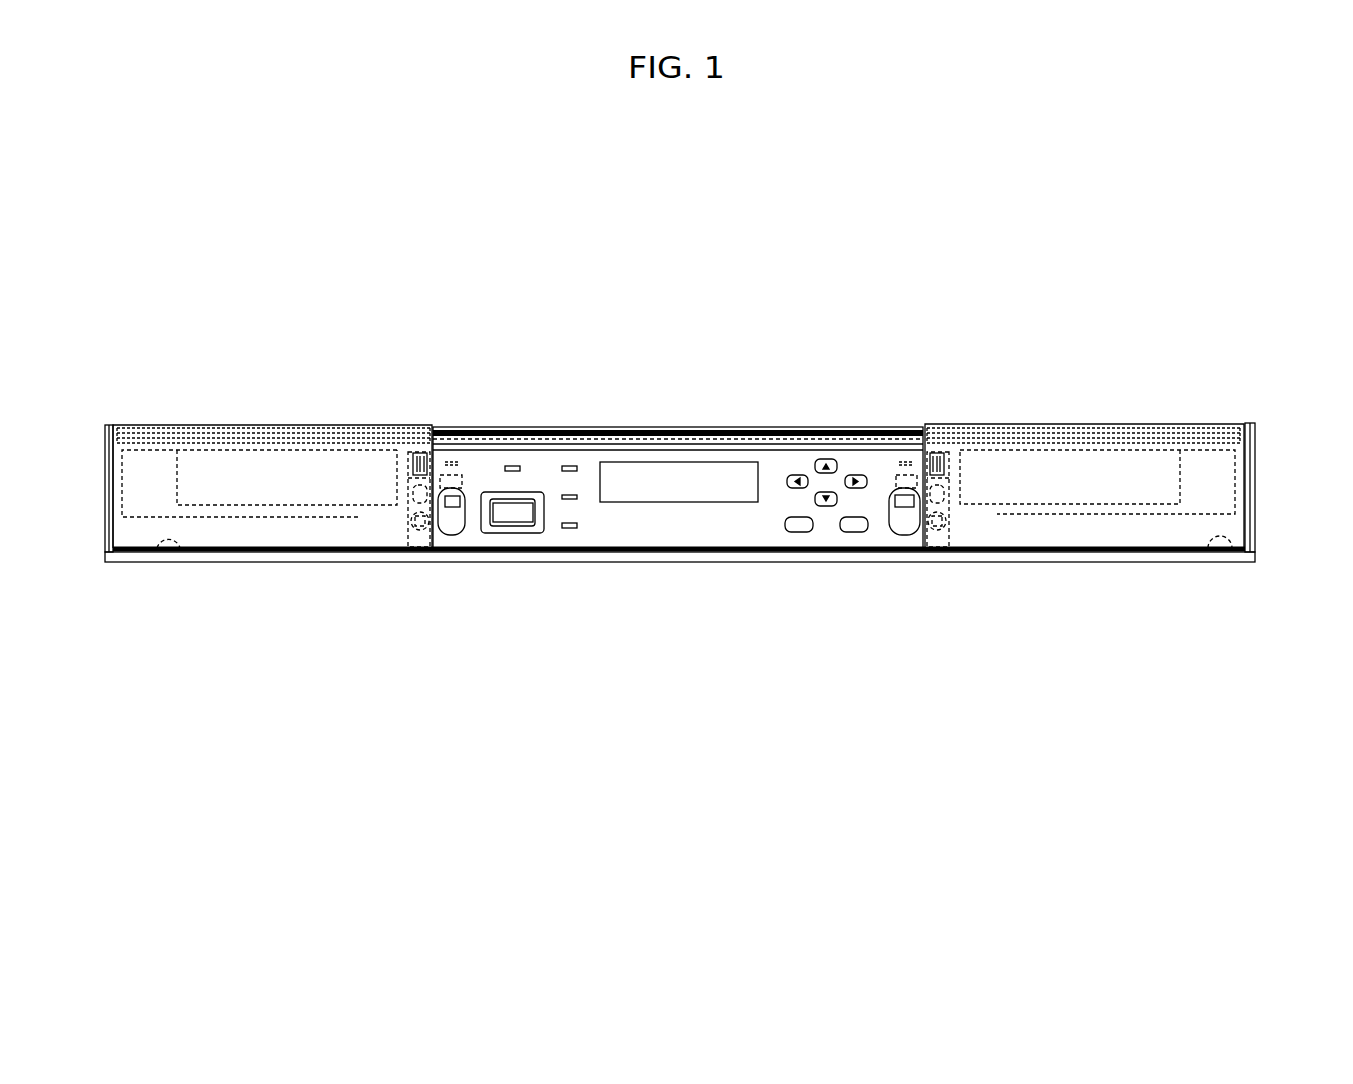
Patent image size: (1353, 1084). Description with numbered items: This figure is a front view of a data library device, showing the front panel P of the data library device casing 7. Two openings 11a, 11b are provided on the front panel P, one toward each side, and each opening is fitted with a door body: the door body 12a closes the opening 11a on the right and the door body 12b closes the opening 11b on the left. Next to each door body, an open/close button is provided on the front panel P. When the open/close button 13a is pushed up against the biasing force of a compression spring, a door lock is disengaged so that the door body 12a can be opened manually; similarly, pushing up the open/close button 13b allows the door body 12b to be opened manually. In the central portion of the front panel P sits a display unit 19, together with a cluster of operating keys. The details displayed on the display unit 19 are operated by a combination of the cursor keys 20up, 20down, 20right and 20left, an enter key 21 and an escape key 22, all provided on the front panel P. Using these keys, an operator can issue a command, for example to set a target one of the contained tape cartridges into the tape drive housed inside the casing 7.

The data library device casing 7 is at (240, 563).
The opening 11a is at (1240, 560).
The opening 11b is at (150, 555).
The door body 12a is at (1112, 533).
The door body 12b is at (293, 537).
The open/close button 13a is at (904, 507).
The open/close button 13b is at (452, 507).
The display unit 19 is at (633, 476).
The cursor key 20up is at (826, 459).
The cursor key 20down is at (829, 492).
The cursor key 20left is at (797, 476).
The cursor key 20right is at (862, 478).
The enter key 21 is at (801, 532).
The escape key 22 is at (856, 532).
The front panel P is at (657, 523).